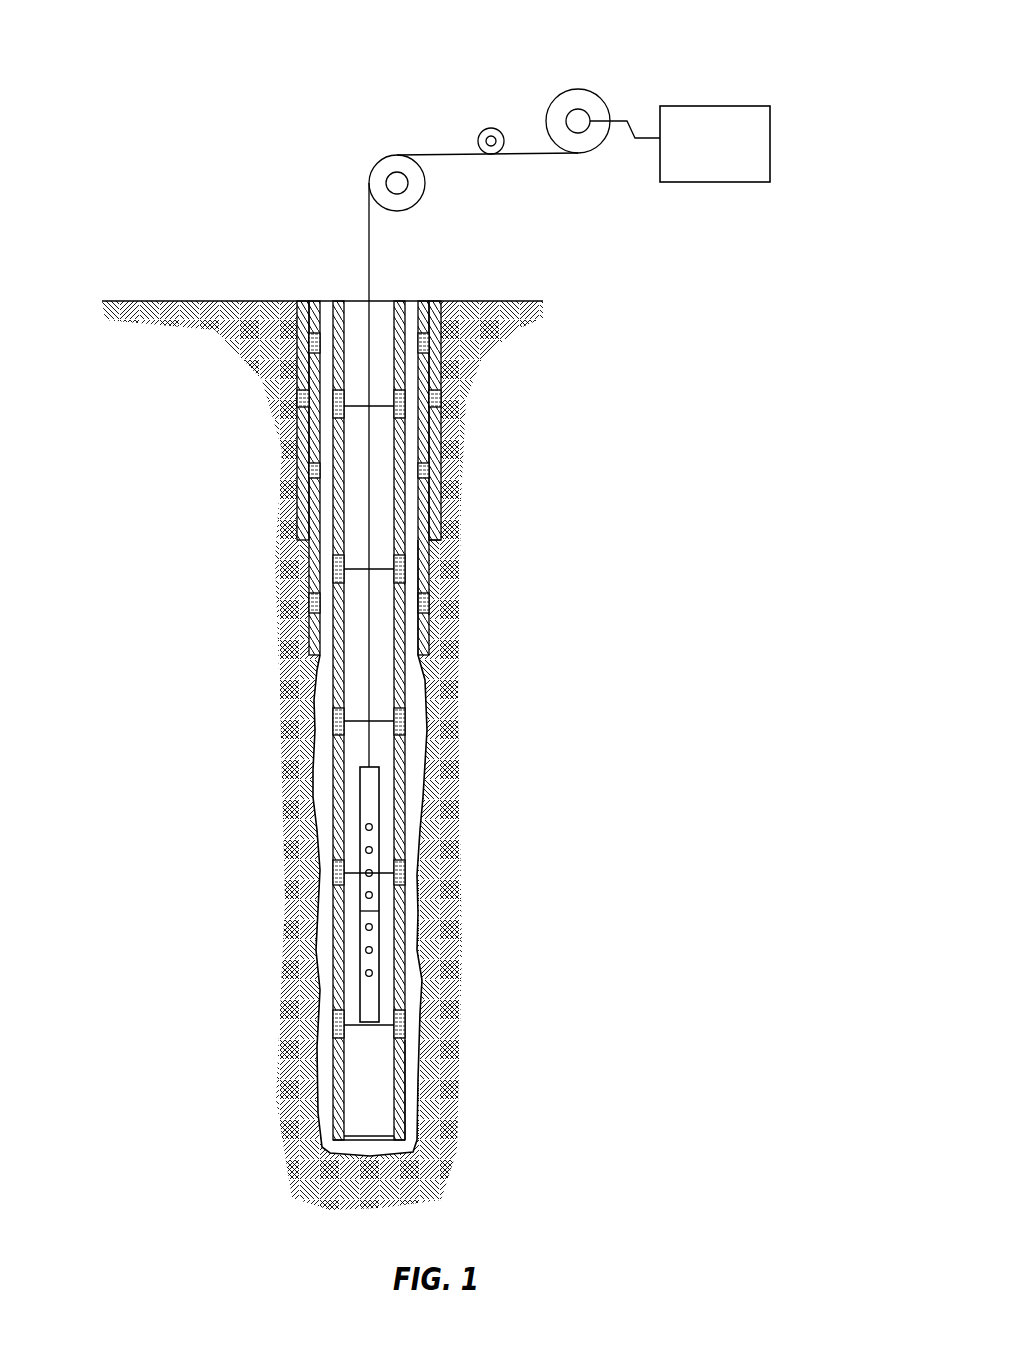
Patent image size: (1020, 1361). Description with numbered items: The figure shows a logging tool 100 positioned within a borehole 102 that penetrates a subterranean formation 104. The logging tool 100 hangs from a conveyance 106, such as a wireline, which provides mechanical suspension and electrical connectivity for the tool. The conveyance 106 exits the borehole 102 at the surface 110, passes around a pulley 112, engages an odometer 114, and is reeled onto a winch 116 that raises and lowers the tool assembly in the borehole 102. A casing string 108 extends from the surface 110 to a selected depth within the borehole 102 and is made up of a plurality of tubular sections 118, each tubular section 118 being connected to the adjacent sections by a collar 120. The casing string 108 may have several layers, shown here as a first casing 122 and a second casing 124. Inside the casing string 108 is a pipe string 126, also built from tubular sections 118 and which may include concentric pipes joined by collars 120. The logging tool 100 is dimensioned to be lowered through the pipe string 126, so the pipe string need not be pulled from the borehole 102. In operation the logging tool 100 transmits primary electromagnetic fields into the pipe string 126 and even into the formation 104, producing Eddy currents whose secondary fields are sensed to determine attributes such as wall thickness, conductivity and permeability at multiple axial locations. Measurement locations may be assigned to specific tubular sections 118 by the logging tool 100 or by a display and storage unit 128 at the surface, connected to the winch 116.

The logging tool 100 is at (368, 1010).
The borehole 102 is at (421, 881).
The subterranean formation 104 is at (613, 627).
The conveyance 106 is at (371, 262).
The casing string 108 is at (280, 533).
The surface 110 is at (142, 300).
The pulley 112 is at (375, 165).
The odometer 114 is at (490, 128).
The winch 116 is at (598, 90).
The tubular section 118 is at (310, 312).
The collar 120 is at (312, 345).
The first casing 122 is at (430, 567).
The second casing 124 is at (436, 518).
The pipe string 126 is at (407, 1095).
The display and storage unit 128 is at (725, 106).